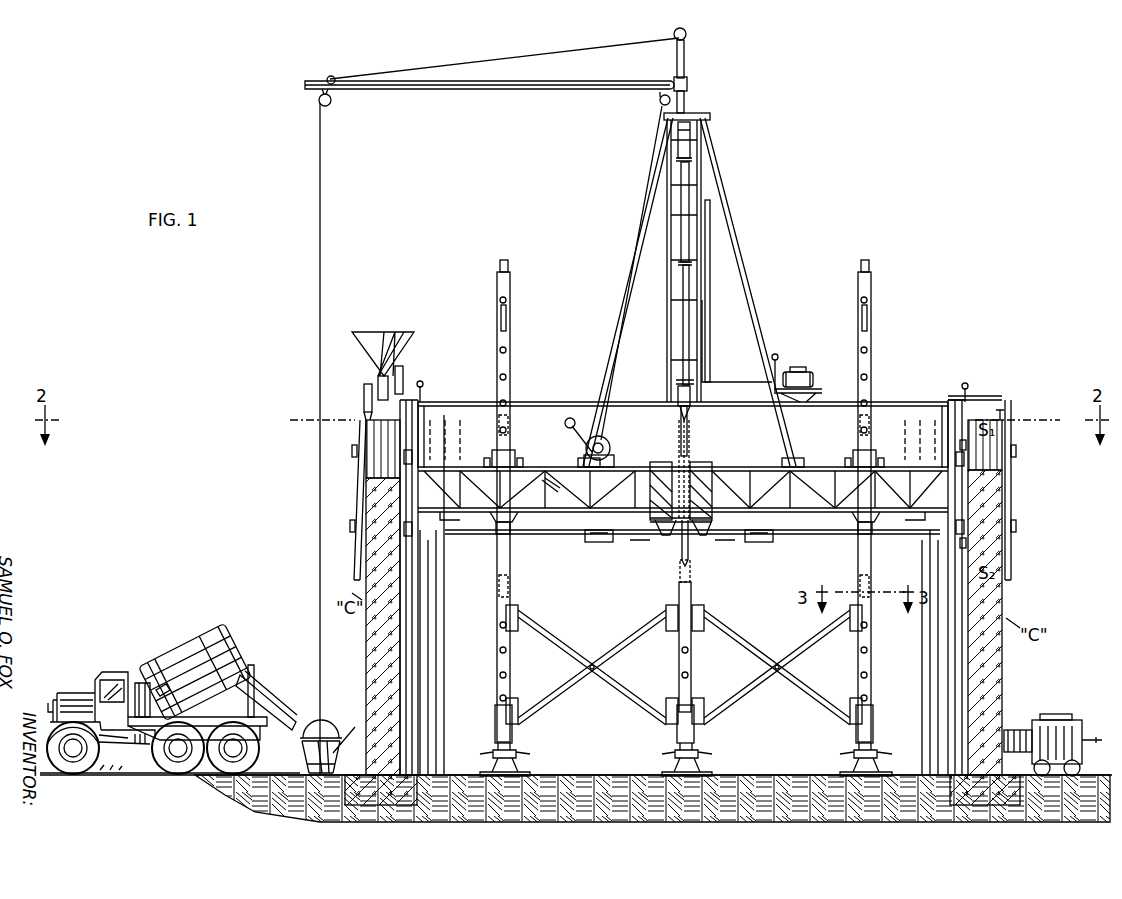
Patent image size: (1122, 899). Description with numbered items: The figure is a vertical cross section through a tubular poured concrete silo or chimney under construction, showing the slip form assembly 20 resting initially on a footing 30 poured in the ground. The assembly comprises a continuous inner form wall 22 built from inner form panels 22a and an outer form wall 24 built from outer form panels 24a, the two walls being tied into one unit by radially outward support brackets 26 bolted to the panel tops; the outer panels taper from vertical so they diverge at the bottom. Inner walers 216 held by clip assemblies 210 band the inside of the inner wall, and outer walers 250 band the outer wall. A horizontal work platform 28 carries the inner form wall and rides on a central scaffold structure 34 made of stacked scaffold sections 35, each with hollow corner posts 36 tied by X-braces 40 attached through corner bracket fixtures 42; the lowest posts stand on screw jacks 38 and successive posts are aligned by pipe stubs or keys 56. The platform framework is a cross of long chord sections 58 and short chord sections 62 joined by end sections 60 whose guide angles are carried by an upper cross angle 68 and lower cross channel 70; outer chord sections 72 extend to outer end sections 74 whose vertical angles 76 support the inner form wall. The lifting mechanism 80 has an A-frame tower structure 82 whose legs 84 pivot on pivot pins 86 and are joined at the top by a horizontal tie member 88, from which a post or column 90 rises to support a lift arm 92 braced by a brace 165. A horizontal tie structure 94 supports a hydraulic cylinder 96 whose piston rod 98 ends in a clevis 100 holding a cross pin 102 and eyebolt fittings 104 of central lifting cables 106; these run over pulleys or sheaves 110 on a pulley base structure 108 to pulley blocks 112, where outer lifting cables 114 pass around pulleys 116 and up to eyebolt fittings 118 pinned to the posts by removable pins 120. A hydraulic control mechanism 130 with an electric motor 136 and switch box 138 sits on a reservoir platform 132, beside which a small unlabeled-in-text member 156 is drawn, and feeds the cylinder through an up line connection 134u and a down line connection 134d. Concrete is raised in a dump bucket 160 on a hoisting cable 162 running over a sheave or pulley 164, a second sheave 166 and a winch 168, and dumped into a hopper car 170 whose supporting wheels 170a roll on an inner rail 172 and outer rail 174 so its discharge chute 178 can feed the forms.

The slip form assembly 20 is at (669, 568).
The inner form wall 22 is at (944, 398).
The inner form panels 22a is at (390, 480).
The outer form wall 24 is at (661, 587).
The outer form panels 24a is at (392, 496).
The support brackets 26 is at (428, 404).
The work platform 28 is at (627, 466).
The footing 30 is at (576, 793).
The scaffold structure 34 is at (492, 735).
The scaffold sections 35 is at (492, 345).
The corner posts 36 is at (511, 340).
The screw jacks 38 is at (490, 755).
The X-braces 40 is at (638, 628).
The corner bracket fixtures 42 is at (514, 618).
The pipe stubs or keys 56 is at (509, 266).
The chord sections 58 is at (660, 458).
The end sections 60 is at (514, 453).
The short chord sections 62 is at (590, 512).
The upper cross angle 68 is at (486, 456).
The lower cross channel 70 is at (494, 522).
The outer chord sections 72 is at (418, 520).
The outer end sections 74 is at (358, 505).
The vertical angles 76 is at (684, 597).
The lifting mechanism 80 is at (734, 254).
The A-frame tower structure 82 is at (722, 160).
The legs 84 is at (624, 255).
The pivot pins 86 is at (788, 458).
The horizontal tie member 88 is at (690, 117).
The post or column 90 is at (686, 68).
The lift arm 92 is at (498, 88).
The horizontal tie structure 94 is at (692, 130).
The hydraulic cylinder 96 is at (700, 202).
The piston rod 98 is at (690, 333).
The clevis 100 is at (692, 389).
The cross pin 102 is at (677, 392).
The eyebolt fittings 104 is at (690, 410).
The central lifting cables 106 is at (702, 444).
The pulley base structure 108 is at (714, 516).
The pulleys or sheaves 110 is at (698, 543).
The pulley block 112 is at (598, 543).
The outer lifting cables 114 is at (556, 536).
The pulleys 116 is at (506, 536).
The eyebolt fittings 118 is at (507, 312).
The removable pins 120 is at (500, 303).
The hydraulic control mechanism 130 is at (817, 354).
The platform 132 is at (818, 391).
The down line connection 134d is at (712, 258).
The up line connection 134u is at (718, 372).
The electric motor 136 is at (806, 370).
The switch box 138 is at (808, 373).
The support post 156 is at (773, 352).
The dump bucket 160 is at (324, 738).
The hoisting cable 162 is at (322, 232).
The sheave or pulley 164 is at (330, 104).
The brace 165 is at (460, 60).
The sheave 166 is at (658, 100).
The winch 168 is at (603, 435).
The hopper car 170 is at (356, 353).
The supporting wheels 170a is at (364, 392).
The inner rail 172 is at (418, 396).
The outer rail 174 is at (360, 420).
The discharge chute 178 is at (378, 384).
The clip assemblies 210 is at (404, 454).
The inner walers 216 is at (966, 446).
The outer walers 250 is at (352, 525).